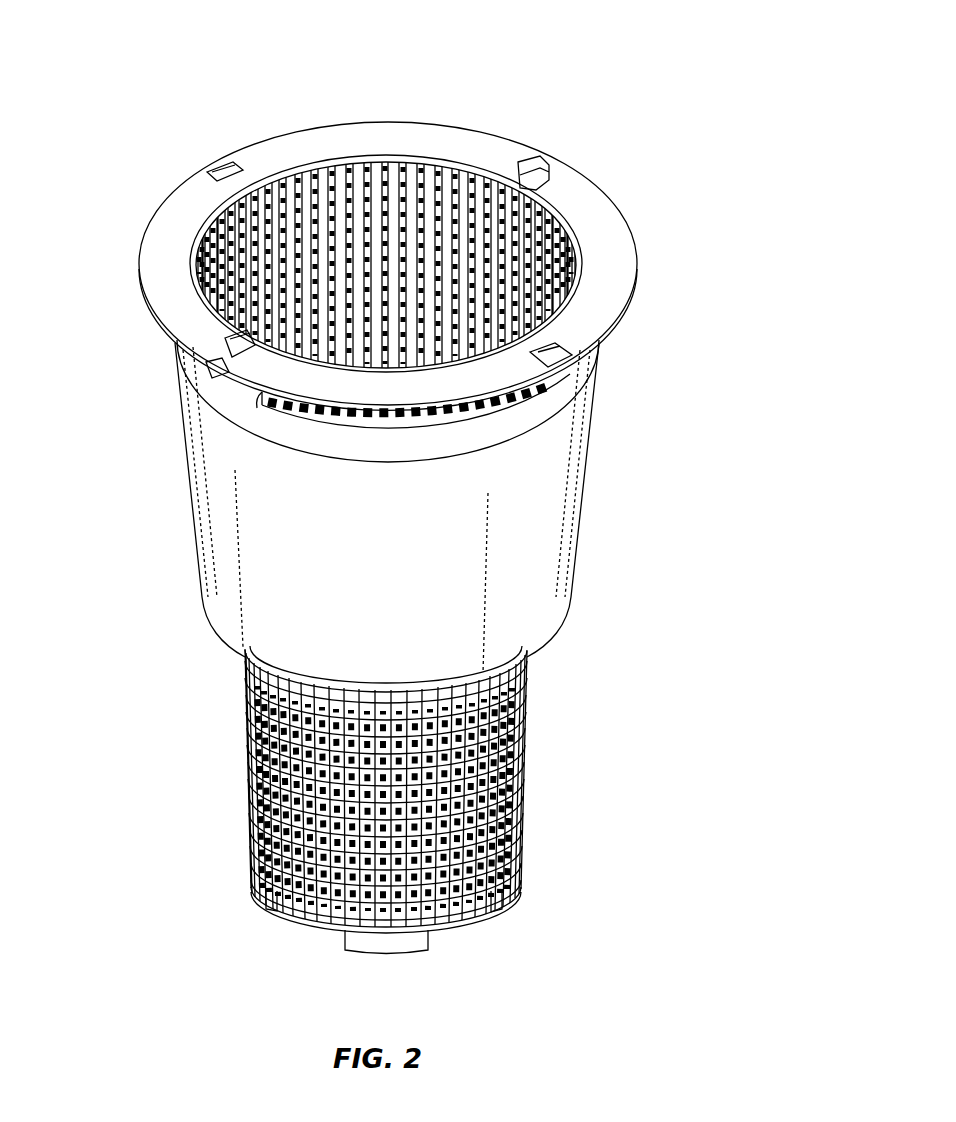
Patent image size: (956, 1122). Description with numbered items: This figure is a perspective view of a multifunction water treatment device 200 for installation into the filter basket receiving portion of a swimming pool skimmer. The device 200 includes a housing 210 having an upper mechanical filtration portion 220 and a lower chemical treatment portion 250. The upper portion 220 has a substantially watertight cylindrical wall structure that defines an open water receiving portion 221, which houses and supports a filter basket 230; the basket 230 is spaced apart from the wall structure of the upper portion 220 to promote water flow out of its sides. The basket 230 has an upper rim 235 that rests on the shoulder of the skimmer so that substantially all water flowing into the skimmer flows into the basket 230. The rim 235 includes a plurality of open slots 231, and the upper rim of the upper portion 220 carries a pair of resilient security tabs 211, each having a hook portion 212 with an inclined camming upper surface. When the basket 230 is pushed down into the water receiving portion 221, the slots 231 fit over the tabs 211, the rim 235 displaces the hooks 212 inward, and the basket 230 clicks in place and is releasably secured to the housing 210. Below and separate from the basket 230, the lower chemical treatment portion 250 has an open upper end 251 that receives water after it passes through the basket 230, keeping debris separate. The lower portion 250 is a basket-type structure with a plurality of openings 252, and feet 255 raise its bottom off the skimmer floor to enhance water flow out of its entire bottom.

The water treatment device 200 is at (443, 90).
The housing 210 is at (237, 390).
The security tabs 211 is at (545, 160).
The hook portion 212 is at (230, 360).
The upper mechanical filtration portion 220 is at (566, 490).
The open water receiving portion 221 is at (318, 203).
The filter basket 230 is at (440, 162).
The open slots 231 is at (228, 172).
The upper rim 235 is at (167, 240).
The lower chemical treatment portion 250 is at (528, 778).
The upper end 251 is at (530, 677).
The openings 252 is at (462, 875).
The feet 255 is at (407, 952).